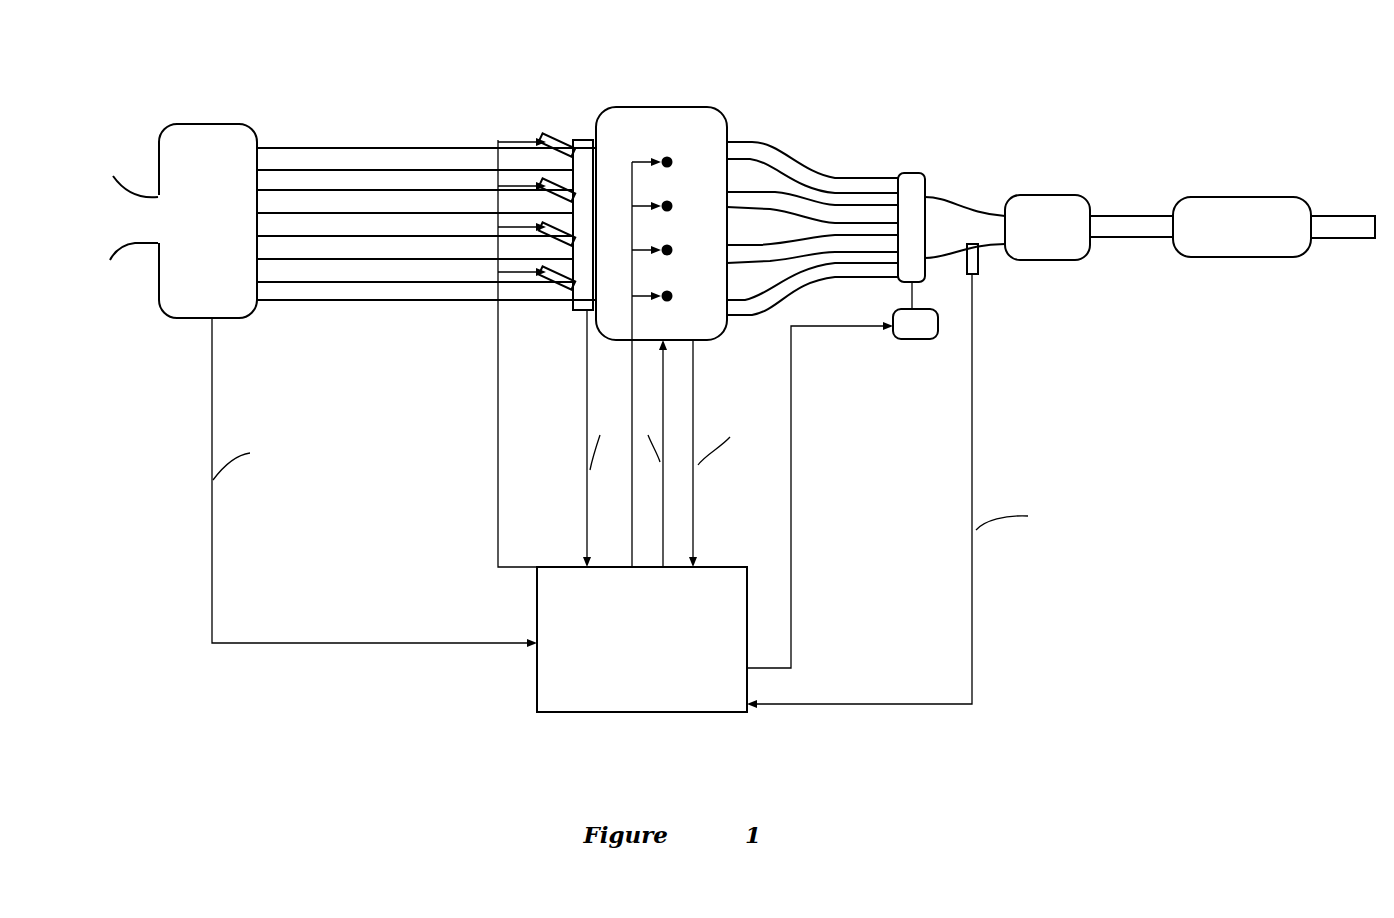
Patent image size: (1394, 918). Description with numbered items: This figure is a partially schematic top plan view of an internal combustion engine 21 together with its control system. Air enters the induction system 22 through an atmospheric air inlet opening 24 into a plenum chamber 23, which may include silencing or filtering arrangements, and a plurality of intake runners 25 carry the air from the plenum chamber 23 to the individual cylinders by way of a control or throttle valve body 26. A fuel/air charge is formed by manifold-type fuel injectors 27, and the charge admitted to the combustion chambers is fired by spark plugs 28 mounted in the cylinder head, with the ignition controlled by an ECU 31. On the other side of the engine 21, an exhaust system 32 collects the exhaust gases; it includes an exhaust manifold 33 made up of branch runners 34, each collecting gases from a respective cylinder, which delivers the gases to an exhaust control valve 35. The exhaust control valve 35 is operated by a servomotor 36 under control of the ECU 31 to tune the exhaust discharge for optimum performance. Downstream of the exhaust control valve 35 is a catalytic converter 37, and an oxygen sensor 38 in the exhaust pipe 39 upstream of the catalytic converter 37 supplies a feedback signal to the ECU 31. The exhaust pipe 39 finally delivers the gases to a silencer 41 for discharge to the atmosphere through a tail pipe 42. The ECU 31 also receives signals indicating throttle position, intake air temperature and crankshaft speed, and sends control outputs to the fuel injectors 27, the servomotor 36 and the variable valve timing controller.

The engine 21 is at (708, 70).
The induction system 22 is at (397, 124).
The plenum chamber 23 is at (158, 150).
The atmospheric air inlet opening 24 is at (120, 252).
The intake runners 25 is at (461, 148).
The throttle valve body 26 is at (581, 140).
The fuel injectors 27 is at (556, 140).
The spark plugs 28 is at (667, 157).
The ECU 31 is at (665, 712).
The exhaust system 32 is at (1127, 167).
The exhaust manifold 33 is at (770, 141).
The branch runners 34 is at (770, 297).
The exhaust control valve 35 is at (912, 172).
The servomotor 36 is at (912, 340).
The catalytic converter 37 is at (1078, 260).
The oxygen sensor 38 is at (980, 268).
The exhaust pipe 39 is at (1160, 215).
The silencer 41 is at (1245, 257).
The tail pipe 42 is at (1345, 215).